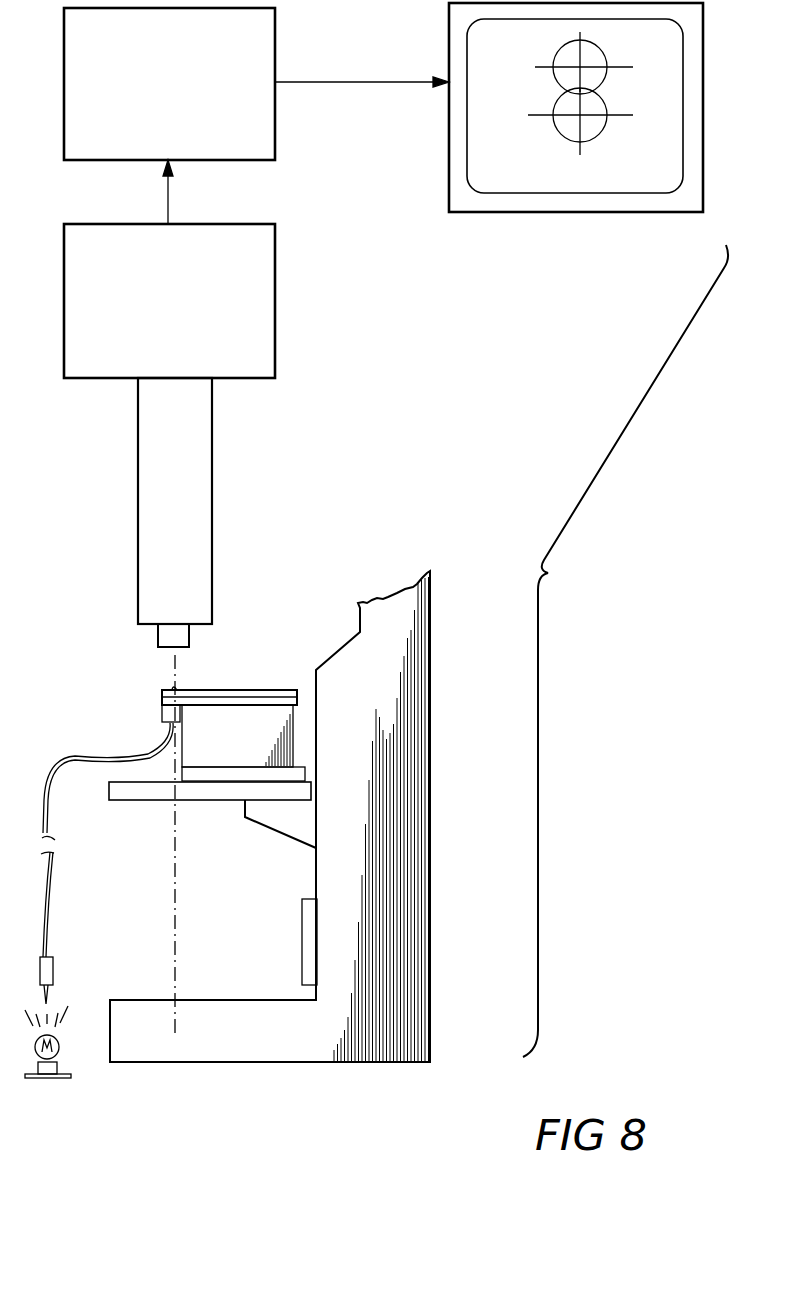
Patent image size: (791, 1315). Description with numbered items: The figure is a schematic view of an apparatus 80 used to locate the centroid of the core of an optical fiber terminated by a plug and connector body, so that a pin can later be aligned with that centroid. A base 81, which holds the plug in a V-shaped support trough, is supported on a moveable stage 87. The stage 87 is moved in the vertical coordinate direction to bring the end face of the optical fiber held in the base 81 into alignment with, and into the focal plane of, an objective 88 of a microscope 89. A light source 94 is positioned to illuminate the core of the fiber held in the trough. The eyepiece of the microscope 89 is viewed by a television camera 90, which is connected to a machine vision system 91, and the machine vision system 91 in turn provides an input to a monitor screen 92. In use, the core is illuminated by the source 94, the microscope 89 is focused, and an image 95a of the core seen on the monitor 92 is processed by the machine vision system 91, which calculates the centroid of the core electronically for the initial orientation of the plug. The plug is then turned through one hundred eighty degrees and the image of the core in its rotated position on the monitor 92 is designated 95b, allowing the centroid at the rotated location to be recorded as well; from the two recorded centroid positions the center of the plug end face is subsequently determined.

The apparatus 80 is at (568, 575).
The base 81 is at (246, 688).
The moveable stage 87 is at (126, 791).
The objective 88 is at (189, 636).
The microscope 89 is at (212, 492).
The television camera 90 is at (275, 333).
The machine vision system 91 is at (275, 130).
The monitor screen 92 is at (475, 213).
The light source 94 is at (62, 1082).
The image of the core 95a is at (557, 52).
The image of the core in rotated position 95b is at (561, 134).